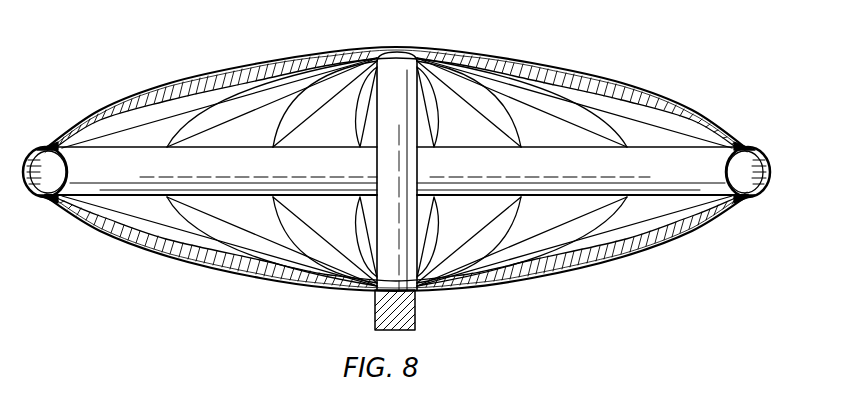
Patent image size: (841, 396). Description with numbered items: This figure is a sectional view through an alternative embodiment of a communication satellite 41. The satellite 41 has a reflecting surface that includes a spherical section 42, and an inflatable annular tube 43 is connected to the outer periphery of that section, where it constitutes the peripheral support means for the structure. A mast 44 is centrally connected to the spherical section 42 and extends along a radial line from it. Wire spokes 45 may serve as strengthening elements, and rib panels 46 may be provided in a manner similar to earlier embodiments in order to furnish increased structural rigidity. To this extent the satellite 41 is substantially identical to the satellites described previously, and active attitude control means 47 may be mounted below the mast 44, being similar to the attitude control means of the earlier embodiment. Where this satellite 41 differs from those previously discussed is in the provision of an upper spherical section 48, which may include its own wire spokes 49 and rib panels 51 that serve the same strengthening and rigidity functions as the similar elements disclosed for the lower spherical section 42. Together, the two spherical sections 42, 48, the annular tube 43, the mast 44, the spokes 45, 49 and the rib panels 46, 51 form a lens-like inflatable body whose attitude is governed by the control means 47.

The communication satellite 41 is at (578, 271).
The spherical section 42 is at (293, 283).
The inflatable annular tube 43 is at (757, 147).
The mast 44 is at (418, 160).
The wire spokes 45 is at (281, 232).
The rib panels 46 is at (227, 228).
The active attitude control means 47 is at (418, 305).
The upper spherical section 48 is at (262, 61).
The wire spokes 49 is at (176, 92).
The rib panels 51 is at (421, 112).